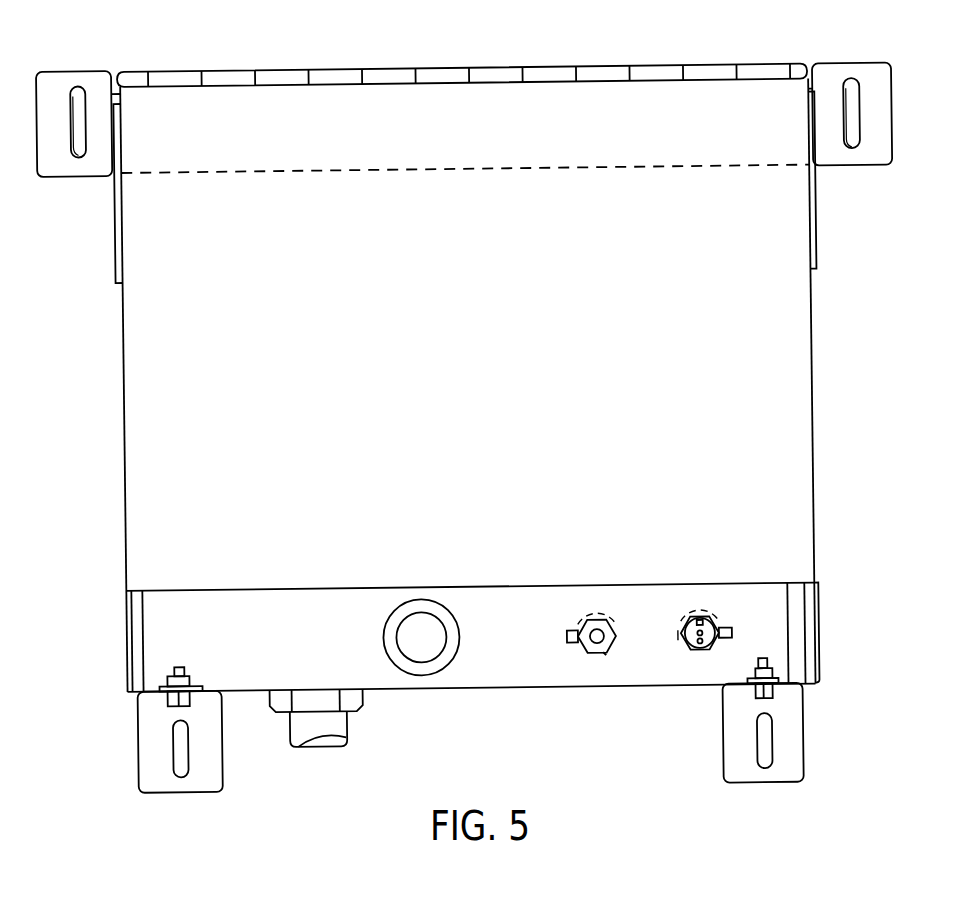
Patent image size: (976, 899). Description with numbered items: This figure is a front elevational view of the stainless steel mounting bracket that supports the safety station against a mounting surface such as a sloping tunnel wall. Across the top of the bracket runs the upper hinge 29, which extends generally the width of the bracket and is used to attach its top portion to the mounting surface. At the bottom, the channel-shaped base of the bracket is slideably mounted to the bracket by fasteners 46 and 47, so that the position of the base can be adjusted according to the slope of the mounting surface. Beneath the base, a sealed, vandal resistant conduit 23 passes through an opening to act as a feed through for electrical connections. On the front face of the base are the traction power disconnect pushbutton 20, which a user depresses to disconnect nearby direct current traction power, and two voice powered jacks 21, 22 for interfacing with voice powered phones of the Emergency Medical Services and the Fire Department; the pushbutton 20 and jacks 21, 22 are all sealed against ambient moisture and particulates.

The pushbutton 20 is at (440, 667).
The voice powered jack 21 is at (545, 660).
The voice powered jack 22 is at (693, 659).
The conduit 23 is at (339, 733).
The upper hinge 29 is at (793, 71).
The fastener 46 is at (761, 671).
The fastener 47 is at (158, 676).